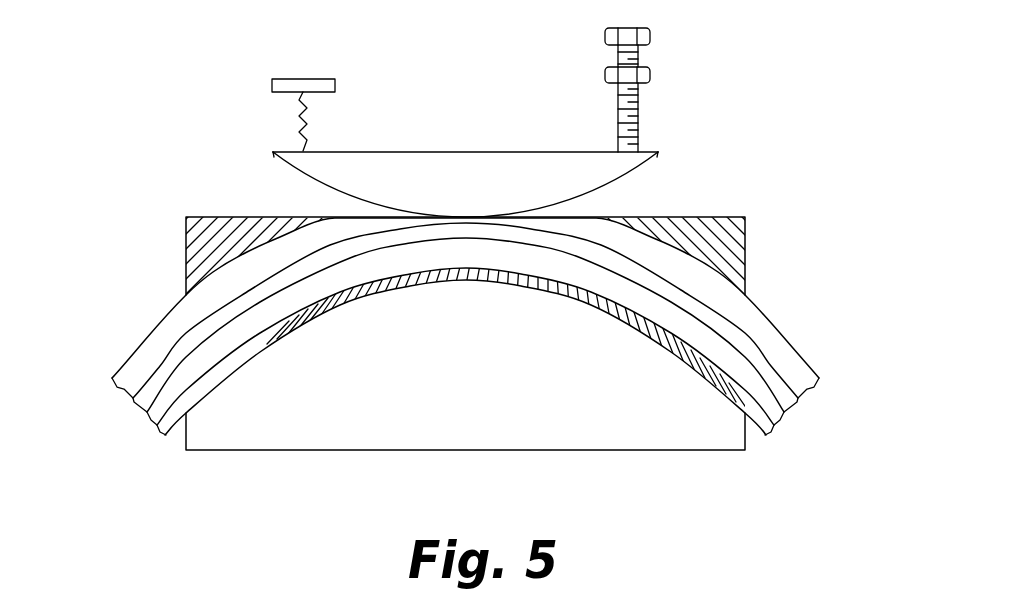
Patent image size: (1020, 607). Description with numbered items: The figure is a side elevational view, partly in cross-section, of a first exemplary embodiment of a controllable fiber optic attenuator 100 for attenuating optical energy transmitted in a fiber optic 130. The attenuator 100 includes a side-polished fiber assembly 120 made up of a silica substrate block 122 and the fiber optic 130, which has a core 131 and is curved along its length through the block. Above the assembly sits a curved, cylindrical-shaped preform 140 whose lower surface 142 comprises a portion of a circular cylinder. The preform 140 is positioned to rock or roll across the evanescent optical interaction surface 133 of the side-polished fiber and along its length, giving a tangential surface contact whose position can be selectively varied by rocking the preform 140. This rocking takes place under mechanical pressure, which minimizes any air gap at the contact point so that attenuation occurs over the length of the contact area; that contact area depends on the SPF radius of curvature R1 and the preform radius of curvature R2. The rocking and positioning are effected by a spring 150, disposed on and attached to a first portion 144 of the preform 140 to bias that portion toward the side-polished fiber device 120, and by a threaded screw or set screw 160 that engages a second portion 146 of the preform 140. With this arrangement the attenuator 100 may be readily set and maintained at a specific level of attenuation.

The attenuator 100 is at (98, 160).
The side-polished fiber assembly 120 is at (215, 455).
The silica substrate block 122 is at (310, 422).
The fiber optic 130 is at (808, 347).
The core 131 is at (786, 398).
The evanescent optical interaction surface 133 is at (360, 215).
The preform 140 is at (467, 150).
The surface 142 is at (612, 183).
The first portion 144 is at (307, 163).
The second portion 146 is at (628, 162).
The spring 150 is at (267, 105).
The set screw 160 is at (668, 103).
The SPF radius of curvature R1 is at (610, 255).
The preform radius of curvature R2 is at (565, 200).